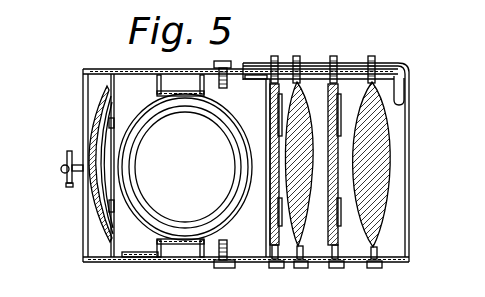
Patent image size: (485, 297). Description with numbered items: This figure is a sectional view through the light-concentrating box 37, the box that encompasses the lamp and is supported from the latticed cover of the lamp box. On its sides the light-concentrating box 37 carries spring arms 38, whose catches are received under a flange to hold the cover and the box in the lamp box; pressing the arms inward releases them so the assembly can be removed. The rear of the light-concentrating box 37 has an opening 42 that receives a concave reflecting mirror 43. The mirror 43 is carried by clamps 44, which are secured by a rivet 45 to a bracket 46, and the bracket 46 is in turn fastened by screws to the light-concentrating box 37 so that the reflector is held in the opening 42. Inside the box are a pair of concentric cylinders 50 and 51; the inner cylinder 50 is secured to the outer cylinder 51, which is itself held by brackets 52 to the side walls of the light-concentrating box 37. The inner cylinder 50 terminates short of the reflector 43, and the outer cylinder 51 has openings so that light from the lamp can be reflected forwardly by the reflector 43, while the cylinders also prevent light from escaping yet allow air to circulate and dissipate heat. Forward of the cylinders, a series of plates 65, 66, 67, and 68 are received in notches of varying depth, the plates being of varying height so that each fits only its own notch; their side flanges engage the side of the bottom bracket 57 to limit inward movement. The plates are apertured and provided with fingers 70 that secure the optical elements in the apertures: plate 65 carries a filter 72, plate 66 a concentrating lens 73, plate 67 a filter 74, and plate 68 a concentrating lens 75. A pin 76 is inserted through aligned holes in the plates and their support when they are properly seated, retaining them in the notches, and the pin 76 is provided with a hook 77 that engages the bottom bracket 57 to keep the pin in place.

The light-concentrating box 37 is at (101, 69).
The spring arms 38 is at (213, 66).
The opening 42 is at (83, 86).
The concave reflecting mirror 43 is at (88, 123).
The clamps 44 is at (86, 148).
The rivet 45 is at (65, 168).
The bracket 46 is at (68, 185).
The inner cylinder 50 is at (233, 147).
The outer cylinder 51 is at (251, 173).
The brackets 52 is at (157, 89).
The bottom bracket 57 is at (409, 157).
The plate 65 is at (275, 56).
The plate 66 is at (298, 56).
The plate 67 is at (334, 56).
The plate 68 is at (375, 56).
The fingers 70 is at (348, 233).
The filter 72 is at (274, 133).
The concentrating lens 73 is at (280, 213).
The filter 74 is at (341, 138).
The concentrating lens 75 is at (375, 185).
The pin 76 is at (346, 78).
The hook 77 is at (406, 101).